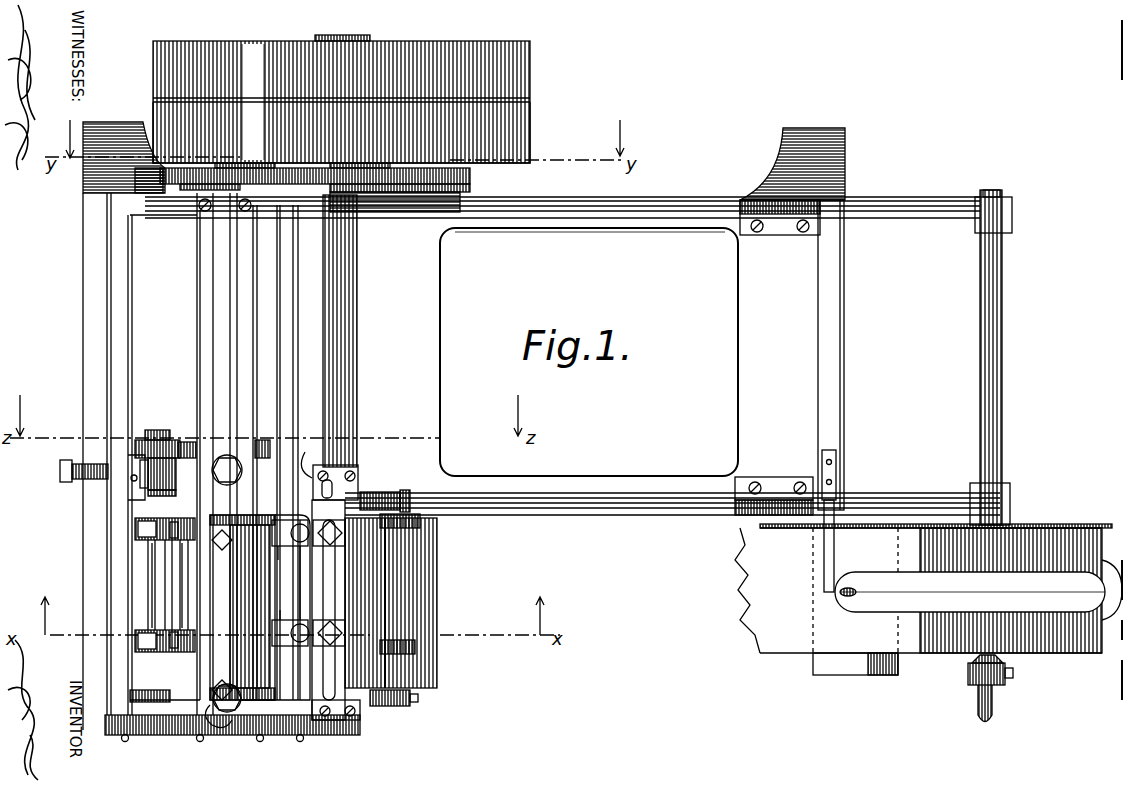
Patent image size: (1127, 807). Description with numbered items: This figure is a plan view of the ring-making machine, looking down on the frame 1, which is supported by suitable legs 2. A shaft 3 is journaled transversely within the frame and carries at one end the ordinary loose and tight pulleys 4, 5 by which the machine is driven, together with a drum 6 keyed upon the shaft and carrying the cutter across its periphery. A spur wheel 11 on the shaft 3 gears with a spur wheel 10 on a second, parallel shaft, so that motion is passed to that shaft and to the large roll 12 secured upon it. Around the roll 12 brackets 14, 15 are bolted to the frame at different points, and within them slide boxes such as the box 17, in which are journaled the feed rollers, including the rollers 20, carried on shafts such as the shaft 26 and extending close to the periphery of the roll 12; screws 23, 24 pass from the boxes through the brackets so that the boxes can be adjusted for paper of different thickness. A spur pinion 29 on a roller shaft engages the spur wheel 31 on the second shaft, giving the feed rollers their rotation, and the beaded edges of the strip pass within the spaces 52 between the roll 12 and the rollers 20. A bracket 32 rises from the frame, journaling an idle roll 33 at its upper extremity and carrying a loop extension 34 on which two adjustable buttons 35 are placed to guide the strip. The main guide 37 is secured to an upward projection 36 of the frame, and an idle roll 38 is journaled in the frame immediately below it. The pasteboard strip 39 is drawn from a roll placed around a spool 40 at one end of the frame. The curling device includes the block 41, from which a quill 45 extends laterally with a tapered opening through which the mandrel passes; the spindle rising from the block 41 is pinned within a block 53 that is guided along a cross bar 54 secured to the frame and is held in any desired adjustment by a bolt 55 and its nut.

The frame 1 is at (440, 293).
The legs 2 is at (105, 125).
The shaft 3 is at (345, 312).
The loose pulley 4 is at (530, 127).
The tight pulley 5 is at (530, 76).
The drum 6 is at (437, 588).
The spur wheel 10 is at (200, 190).
The spur wheel 11 is at (470, 178).
The roll 12 is at (188, 570).
The bracket 14 is at (85, 265).
The bracket 15 is at (212, 268).
The box 17 is at (160, 738).
The rollers 20 is at (145, 523).
The screw 23 is at (62, 482).
The screw 24 is at (241, 470).
The shaft 26 is at (155, 600).
The spur pinion 29 is at (142, 440).
The spur wheel 31 is at (268, 445).
The bracket 32 is at (212, 690).
The idle roll 33 is at (250, 590).
The loop extension 34 is at (300, 718).
The adjustable buttons 35 is at (340, 512).
The upward projection 36 is at (408, 500).
The main guide 37 is at (420, 520).
The idle roll 38 is at (385, 608).
The pasteboard strip 39 is at (775, 625).
The spool 40 is at (985, 682).
The block 41 is at (292, 522).
The quill 45 is at (285, 583).
The spaces 52 is at (175, 522).
The block 53 is at (278, 625).
The cross bar 54 is at (360, 715).
The bolt 55 is at (308, 459).